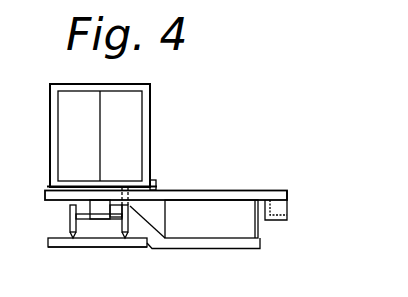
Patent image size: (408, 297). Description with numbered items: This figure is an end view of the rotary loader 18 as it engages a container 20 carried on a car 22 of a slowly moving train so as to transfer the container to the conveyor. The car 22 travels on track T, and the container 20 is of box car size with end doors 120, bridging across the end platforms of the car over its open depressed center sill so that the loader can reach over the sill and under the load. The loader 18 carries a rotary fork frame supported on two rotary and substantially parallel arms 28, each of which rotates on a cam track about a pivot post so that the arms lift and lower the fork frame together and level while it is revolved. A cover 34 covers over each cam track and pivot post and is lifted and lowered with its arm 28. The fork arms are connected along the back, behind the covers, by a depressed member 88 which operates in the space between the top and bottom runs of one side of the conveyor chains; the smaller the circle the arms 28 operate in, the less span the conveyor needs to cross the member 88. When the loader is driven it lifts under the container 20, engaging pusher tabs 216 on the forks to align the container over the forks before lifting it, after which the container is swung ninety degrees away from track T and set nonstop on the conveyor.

The end doors 120 is at (110, 97).
The container 20 is at (151, 111).
The pusher tabs 216 is at (155, 180).
The rotary loader 18 is at (185, 191).
The rotary arms 28 is at (203, 191).
The cover 34 is at (225, 207).
The depressed member 88 is at (266, 222).
The car 22 is at (68, 218).
The track T is at (50, 236).